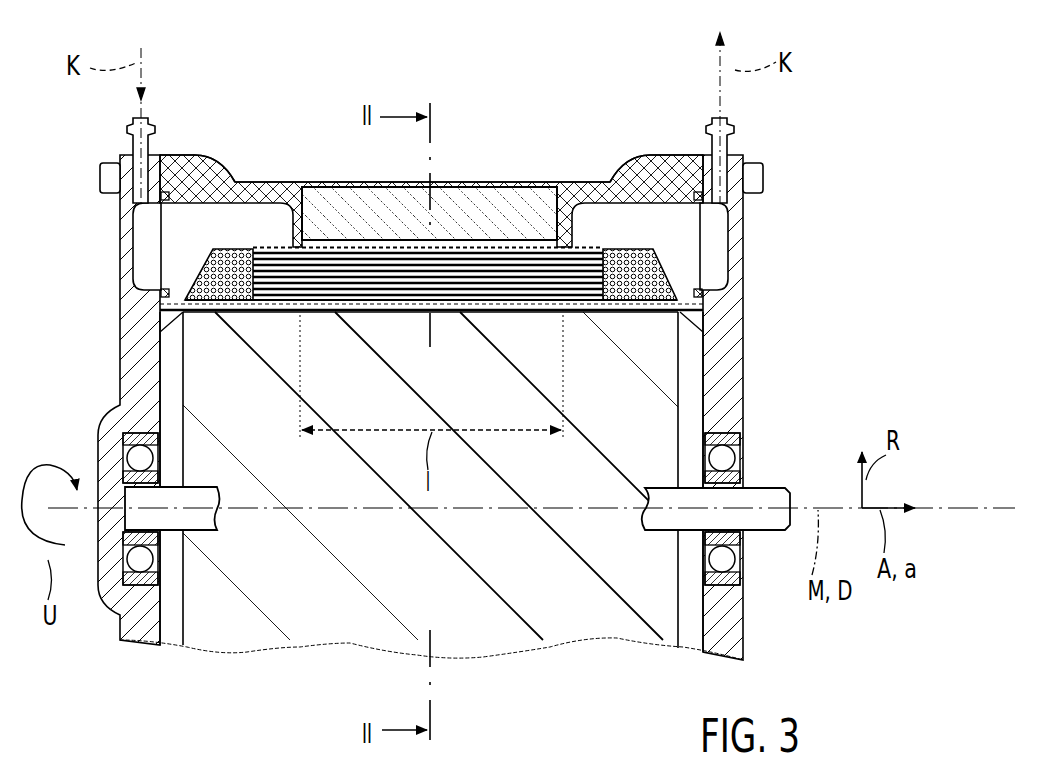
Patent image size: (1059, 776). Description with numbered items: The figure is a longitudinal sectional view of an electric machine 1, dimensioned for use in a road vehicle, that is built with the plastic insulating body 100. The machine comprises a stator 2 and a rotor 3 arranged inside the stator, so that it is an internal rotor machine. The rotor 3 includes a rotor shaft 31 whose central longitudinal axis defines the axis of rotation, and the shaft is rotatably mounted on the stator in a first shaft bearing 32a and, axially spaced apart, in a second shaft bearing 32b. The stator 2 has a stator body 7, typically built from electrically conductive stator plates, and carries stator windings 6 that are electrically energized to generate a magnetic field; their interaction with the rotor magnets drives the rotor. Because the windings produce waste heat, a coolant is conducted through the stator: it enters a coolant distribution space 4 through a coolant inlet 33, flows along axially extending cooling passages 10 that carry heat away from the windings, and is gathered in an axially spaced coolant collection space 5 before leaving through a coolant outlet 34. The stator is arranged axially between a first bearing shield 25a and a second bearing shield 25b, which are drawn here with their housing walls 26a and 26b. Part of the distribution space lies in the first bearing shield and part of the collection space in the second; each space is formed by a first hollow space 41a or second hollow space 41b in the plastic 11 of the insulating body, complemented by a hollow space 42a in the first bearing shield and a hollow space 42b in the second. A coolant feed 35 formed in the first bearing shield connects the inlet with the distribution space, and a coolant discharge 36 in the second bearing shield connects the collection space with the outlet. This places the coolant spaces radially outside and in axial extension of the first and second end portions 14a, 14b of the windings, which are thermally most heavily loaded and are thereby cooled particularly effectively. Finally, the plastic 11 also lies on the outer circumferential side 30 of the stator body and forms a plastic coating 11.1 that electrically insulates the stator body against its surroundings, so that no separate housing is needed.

The electric machine 1 is at (855, 150).
The stator 2 is at (551, 182).
The rotor 3 is at (423, 562).
The coolant distribution space 4 is at (237, 243).
The coolant collection space 5 is at (567, 246).
The stator winding 6 is at (255, 240).
The stator body 7 is at (470, 182).
The cooling passage 10 is at (378, 240).
The plastic 11 is at (598, 182).
The plastic coating 11.1 is at (510, 182).
The first end portion 14a is at (178, 278).
The second end portion 14b is at (683, 255).
The first bearing shield 25a is at (118, 330).
The second bearing shield 25b is at (745, 330).
The first housing wall 26a is at (118, 395).
The second housing wall 26b is at (745, 392).
The outer circumferential side 30 is at (320, 185).
The rotor shaft 31 is at (762, 520).
The first shaft bearing 32a is at (128, 440).
The second shaft bearing 32b is at (742, 442).
The coolant inlet 33 is at (127, 125).
The coolant outlet 34 is at (730, 125).
The coolant feed 35 is at (138, 177).
The coolant discharge 36 is at (729, 175).
The first hollow space 41a is at (230, 228).
The second hollow space 41b is at (651, 215).
The hollow space in first bearing shield 42a is at (140, 232).
The hollow space in second bearing shield 42b is at (725, 232).
The insulating body 100 is at (500, 315).